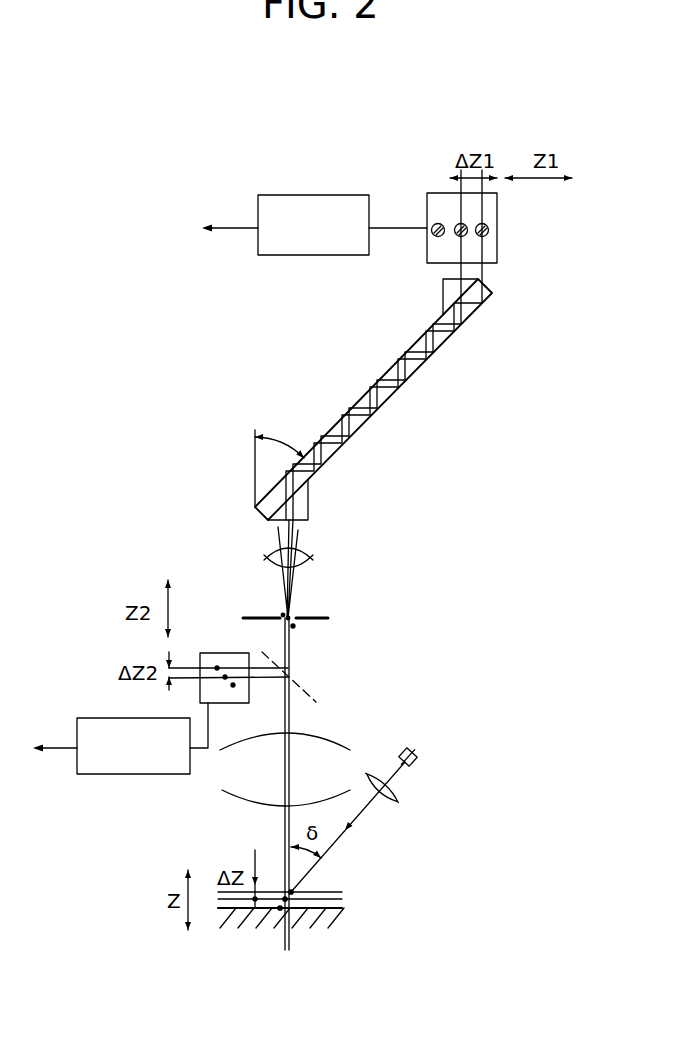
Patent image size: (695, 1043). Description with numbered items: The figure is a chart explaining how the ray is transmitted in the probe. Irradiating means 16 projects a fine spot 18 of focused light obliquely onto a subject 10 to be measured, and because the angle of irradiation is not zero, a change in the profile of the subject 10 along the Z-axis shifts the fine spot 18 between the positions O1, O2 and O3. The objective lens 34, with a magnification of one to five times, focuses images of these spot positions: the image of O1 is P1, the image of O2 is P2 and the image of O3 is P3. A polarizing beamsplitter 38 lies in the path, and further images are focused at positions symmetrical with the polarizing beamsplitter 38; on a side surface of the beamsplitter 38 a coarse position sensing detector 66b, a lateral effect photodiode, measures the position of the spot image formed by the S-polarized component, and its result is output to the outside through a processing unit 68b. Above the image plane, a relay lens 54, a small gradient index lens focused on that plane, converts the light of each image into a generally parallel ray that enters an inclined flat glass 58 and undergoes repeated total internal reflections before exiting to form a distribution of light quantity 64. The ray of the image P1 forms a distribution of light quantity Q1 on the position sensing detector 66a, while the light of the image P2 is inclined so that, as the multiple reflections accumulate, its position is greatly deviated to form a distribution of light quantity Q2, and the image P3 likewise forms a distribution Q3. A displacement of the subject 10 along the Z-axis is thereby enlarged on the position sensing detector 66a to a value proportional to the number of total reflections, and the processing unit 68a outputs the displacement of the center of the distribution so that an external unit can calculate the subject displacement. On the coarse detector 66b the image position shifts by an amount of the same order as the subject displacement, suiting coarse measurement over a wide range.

The subject to be measured 10 is at (234, 921).
The irradiating means 16 is at (420, 780).
The fine spot 18 is at (366, 951).
The objective lens 34 is at (340, 752).
The polarizing beamsplitter 38 is at (310, 692).
The relay lens 54 is at (308, 551).
The flat glass 58 is at (383, 410).
The distribution of light quantity 64 is at (545, 240).
The position sensing detector 66a is at (432, 200).
The coarse position sensing detector 66b is at (200, 696).
The processing unit 68a is at (313, 195).
The processing unit 68b is at (103, 776).
The distribution of light quantity Q1 is at (467, 228).
The distribution of light quantity Q2 is at (487, 236).
The distribution of light quantity Q3 is at (434, 227).
The image P1 is at (319, 595).
The image P2 is at (246, 594).
The image P3 is at (335, 617).
The fine spot position O1 is at (285, 899).
The fine spot position O2 is at (291, 892).
The fine spot position O3 is at (280, 908).